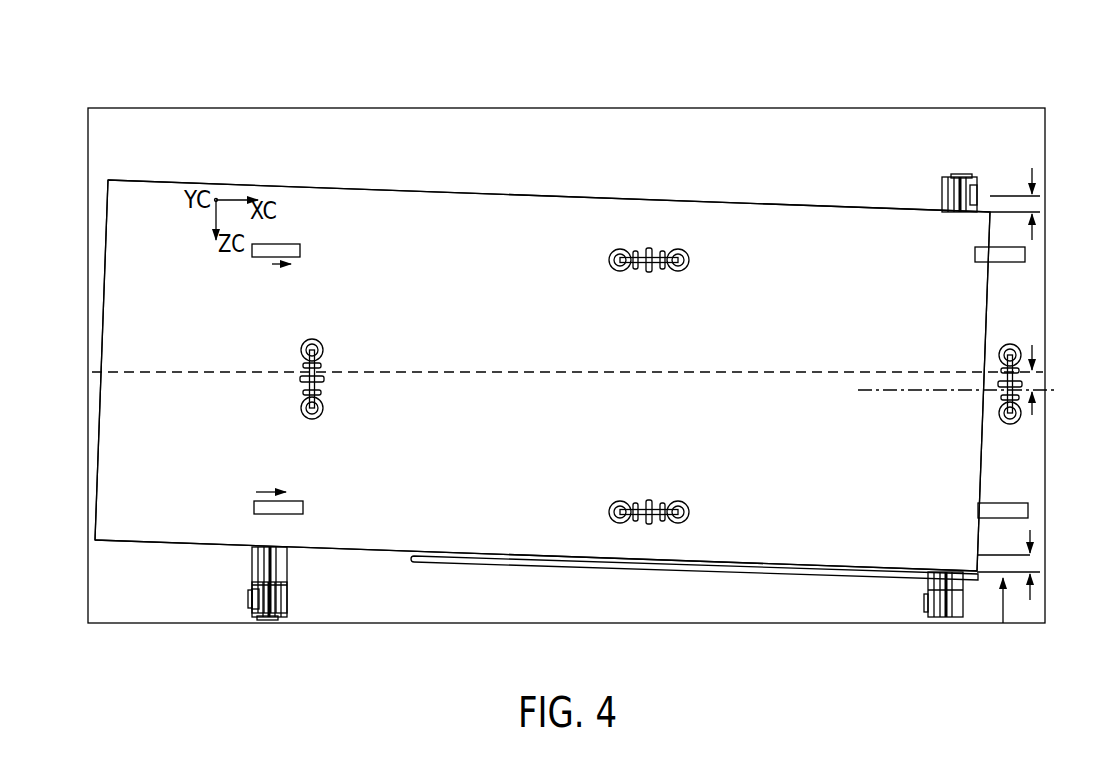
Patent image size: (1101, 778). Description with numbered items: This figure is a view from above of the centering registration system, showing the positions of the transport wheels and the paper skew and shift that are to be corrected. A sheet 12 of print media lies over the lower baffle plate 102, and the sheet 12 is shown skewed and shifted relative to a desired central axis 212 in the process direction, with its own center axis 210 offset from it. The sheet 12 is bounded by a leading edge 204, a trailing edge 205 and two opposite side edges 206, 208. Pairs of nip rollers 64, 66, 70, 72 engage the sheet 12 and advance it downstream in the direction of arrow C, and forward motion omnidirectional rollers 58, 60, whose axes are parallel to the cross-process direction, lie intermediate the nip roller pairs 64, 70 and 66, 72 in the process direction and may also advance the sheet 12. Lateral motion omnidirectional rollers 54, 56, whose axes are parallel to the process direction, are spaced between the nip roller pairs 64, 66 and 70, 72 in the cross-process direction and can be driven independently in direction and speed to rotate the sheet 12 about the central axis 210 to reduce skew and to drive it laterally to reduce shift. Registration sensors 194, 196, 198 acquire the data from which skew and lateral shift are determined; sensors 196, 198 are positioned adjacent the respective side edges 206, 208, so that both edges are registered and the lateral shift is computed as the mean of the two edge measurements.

The lower baffle plate 102 is at (175, 106).
The sheet 12 is at (523, 240).
The trailing edge 205 is at (102, 300).
The side edge 208 is at (779, 200).
The leading edge 204 is at (985, 311).
The side edge 206 is at (864, 575).
The central axis 212 is at (524, 368).
The central axis 210 is at (875, 393).
The pair of nip rollers 64 is at (292, 243).
The pair of nip rollers 66 is at (252, 507).
The omnidirectional roller 54 is at (300, 350).
The omnidirectional roller 56 is at (997, 400).
The omnidirectional roller 58 is at (638, 249).
The omnidirectional roller 60 is at (649, 499).
The pair of nip rollers 70 is at (973, 255).
The pair of nip rollers 72 is at (991, 500).
The registration sensor 198 is at (940, 190).
The registration sensor 194 is at (270, 617).
The registration sensor 196 is at (945, 620).
The skew S is at (408, 559).